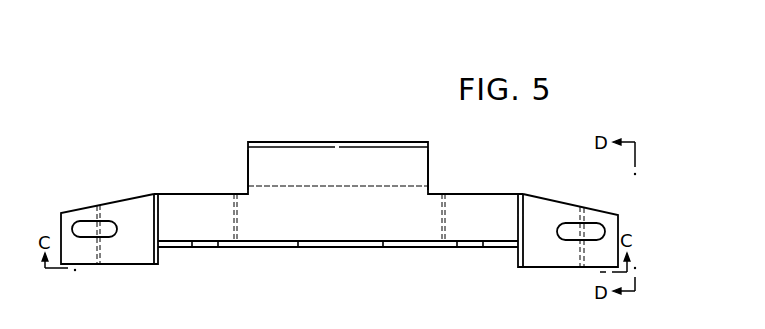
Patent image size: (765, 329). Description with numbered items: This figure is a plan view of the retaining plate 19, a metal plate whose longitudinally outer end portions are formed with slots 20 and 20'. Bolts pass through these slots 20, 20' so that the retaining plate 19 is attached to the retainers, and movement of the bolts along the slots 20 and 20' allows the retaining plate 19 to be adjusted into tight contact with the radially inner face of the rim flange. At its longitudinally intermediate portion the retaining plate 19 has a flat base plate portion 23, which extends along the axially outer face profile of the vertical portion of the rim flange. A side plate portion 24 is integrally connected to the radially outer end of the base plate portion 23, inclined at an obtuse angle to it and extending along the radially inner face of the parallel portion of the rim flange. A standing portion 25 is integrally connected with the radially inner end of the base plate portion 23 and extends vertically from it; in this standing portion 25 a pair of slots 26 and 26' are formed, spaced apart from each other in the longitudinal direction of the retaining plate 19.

The retaining plate 19 is at (458, 193).
The slot 20 is at (565, 223).
The slot 20' is at (110, 219).
The flat base plate portion 23 is at (334, 236).
The side plate portion 24 is at (382, 155).
The standing portion 25 is at (408, 248).
The slot 26 is at (484, 264).
The slot 26' is at (245, 264).